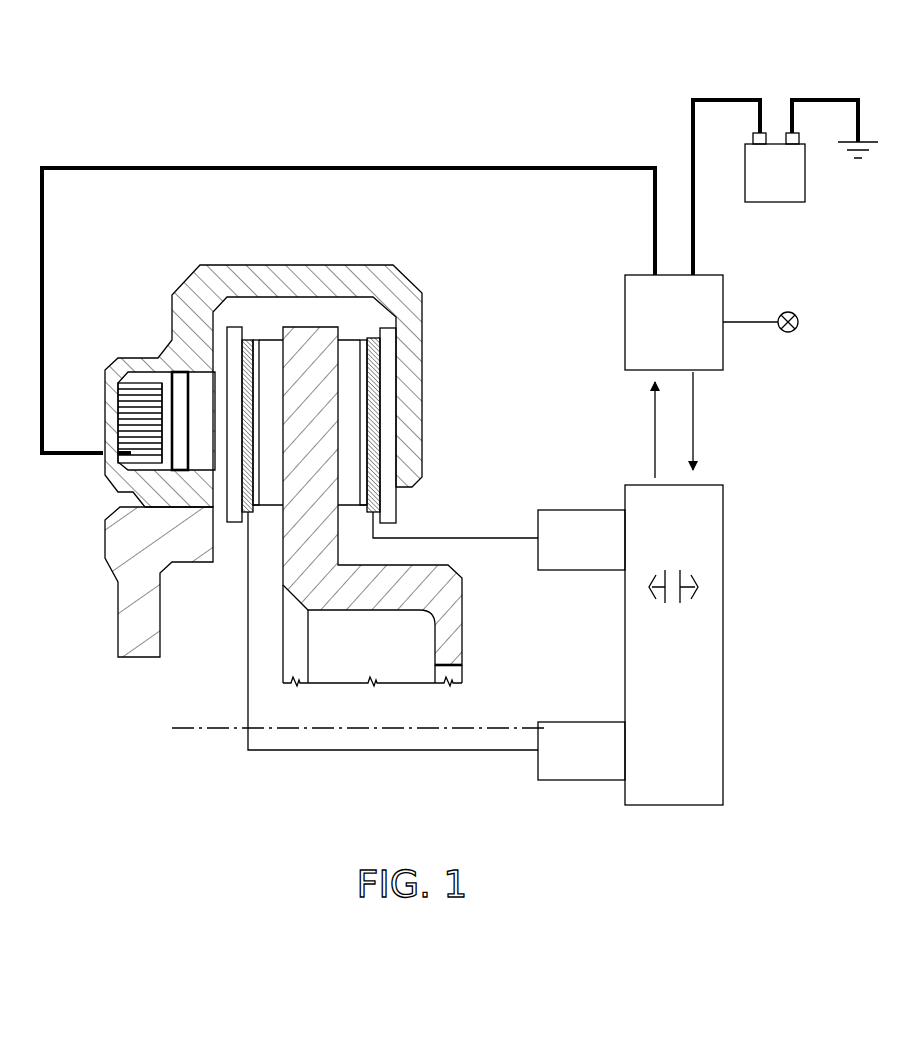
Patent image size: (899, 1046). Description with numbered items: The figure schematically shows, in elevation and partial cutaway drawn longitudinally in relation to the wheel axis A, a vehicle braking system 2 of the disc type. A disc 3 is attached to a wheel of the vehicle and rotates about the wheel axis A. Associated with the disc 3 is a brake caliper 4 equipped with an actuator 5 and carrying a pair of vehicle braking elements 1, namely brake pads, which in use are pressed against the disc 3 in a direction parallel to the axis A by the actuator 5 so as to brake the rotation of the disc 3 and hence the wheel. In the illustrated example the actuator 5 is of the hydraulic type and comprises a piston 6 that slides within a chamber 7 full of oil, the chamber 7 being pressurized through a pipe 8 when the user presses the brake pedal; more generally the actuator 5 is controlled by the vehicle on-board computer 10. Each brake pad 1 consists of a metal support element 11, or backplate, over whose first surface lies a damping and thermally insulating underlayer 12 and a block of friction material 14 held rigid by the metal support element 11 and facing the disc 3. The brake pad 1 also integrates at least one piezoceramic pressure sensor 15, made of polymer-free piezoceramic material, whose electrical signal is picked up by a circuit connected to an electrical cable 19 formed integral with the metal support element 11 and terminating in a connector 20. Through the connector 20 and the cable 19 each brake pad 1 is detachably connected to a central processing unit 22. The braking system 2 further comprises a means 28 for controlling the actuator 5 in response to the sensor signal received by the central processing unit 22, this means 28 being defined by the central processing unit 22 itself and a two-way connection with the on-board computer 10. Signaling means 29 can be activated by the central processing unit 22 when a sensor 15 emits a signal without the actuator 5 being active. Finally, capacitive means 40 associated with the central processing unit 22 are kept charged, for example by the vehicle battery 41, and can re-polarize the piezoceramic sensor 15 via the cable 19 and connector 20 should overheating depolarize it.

The vehicle braking element 1 is at (265, 334).
The braking system 2 is at (118, 770).
The disc 3 is at (320, 413).
The brake caliper 4 is at (420, 319).
The actuator 5 is at (87, 488).
The piston 6 is at (200, 390).
The chamber 7 is at (128, 405).
The pipe 8 is at (53, 455).
The on-board computer 10 is at (632, 298).
The metal support element 11 is at (207, 303).
The underlayer 12 is at (220, 297).
The block of friction material 14 is at (250, 335).
The piezoceramic pressure sensor 15 is at (261, 340).
The electrical cable 19 is at (493, 540).
The connector 20 is at (573, 562).
The central processing unit 22 is at (703, 757).
The means for controlling the actuator means 28 is at (727, 474).
The signaling means 29 is at (798, 314).
The capacitive means 40 is at (697, 565).
The vehicle battery 41 is at (803, 190).
The wheel axis A is at (175, 730).